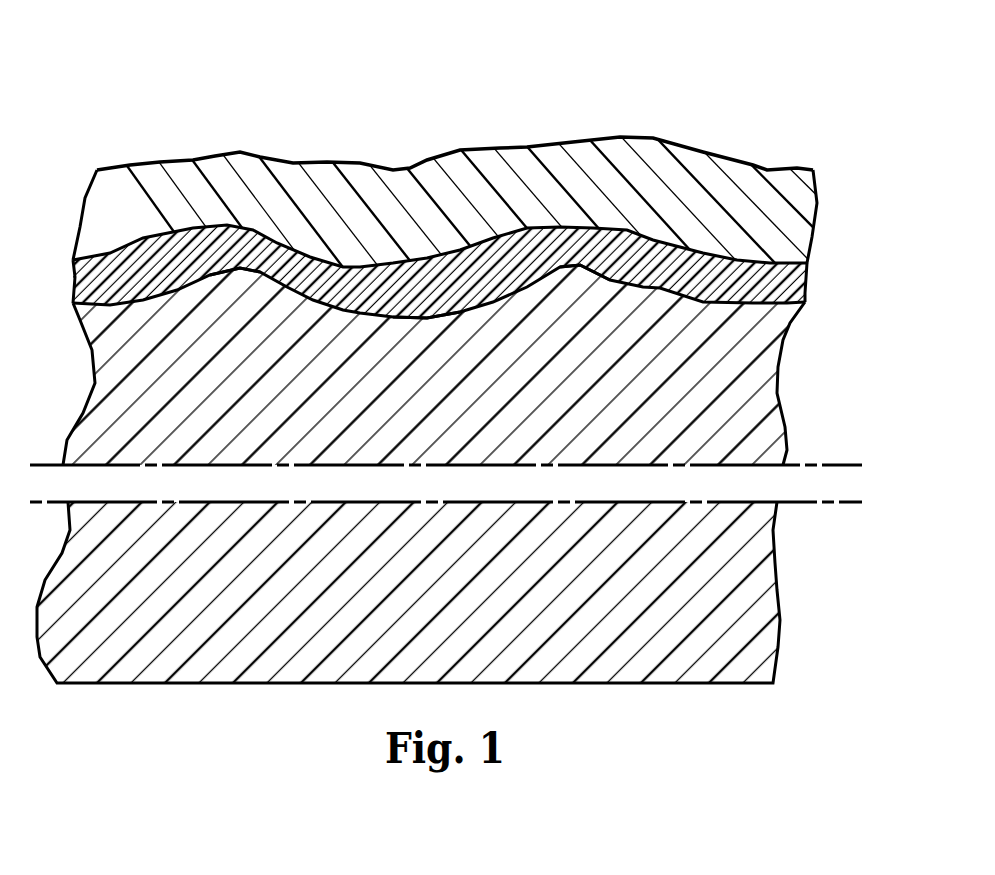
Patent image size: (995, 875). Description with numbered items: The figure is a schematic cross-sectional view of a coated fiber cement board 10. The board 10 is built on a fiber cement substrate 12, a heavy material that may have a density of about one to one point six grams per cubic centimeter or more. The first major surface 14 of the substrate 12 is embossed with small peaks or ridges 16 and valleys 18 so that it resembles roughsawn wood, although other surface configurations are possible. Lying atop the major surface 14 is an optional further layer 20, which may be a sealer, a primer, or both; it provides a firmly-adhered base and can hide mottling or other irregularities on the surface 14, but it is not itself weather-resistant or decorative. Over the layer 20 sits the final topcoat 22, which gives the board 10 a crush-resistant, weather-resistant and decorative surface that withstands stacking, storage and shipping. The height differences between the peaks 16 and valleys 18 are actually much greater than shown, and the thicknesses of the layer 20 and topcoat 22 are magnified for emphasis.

The coated fiber cement board 10 is at (465, 347).
The fiber cement substrate 12 is at (758, 410).
The first major surface 14 is at (752, 310).
The peaks 16 is at (243, 269).
The valleys 18 is at (432, 319).
The further layer 20 is at (795, 292).
The final topcoat 22 is at (800, 233).